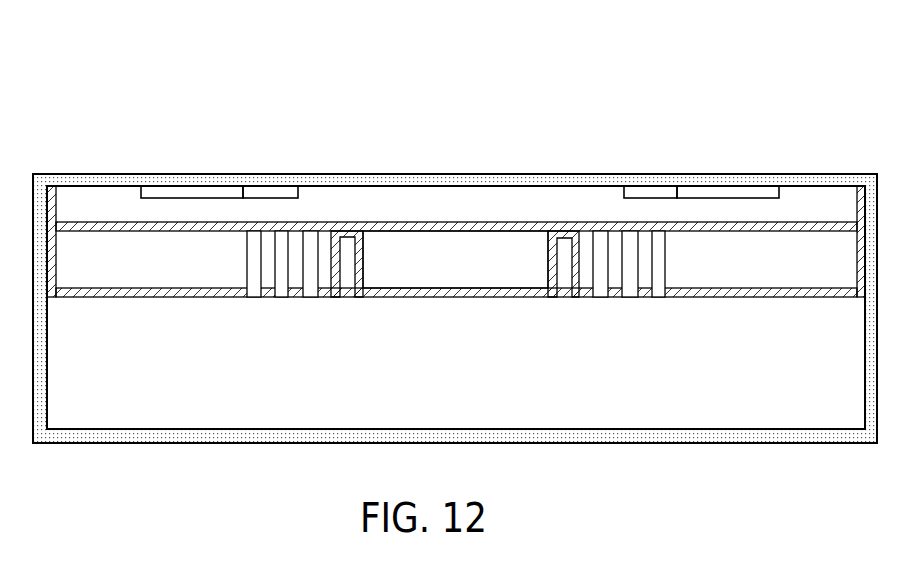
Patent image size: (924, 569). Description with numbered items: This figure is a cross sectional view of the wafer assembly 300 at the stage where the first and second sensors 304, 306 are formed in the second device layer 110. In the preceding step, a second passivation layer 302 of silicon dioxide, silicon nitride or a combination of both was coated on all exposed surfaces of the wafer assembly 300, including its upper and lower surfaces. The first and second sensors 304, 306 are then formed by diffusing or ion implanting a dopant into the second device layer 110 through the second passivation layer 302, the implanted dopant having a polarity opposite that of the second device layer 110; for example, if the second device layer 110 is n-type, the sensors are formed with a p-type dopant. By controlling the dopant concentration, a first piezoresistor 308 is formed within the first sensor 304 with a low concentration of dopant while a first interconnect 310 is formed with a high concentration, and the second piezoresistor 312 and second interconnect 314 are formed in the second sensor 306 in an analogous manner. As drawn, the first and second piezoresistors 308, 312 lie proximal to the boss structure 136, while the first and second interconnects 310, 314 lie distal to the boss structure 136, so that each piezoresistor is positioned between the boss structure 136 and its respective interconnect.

The wafer assembly 300 is at (145, 60).
The second passivation layer 302 is at (385, 172).
The first sensor 304 is at (222, 165).
The second sensor 306 is at (697, 165).
The first piezoresistor 308 is at (267, 186).
The first interconnect 310 is at (190, 186).
The second piezoresistor 312 is at (652, 192).
The second interconnect 314 is at (728, 192).
The second device layer 110 is at (812, 210).
The boss structure 136 is at (479, 272).